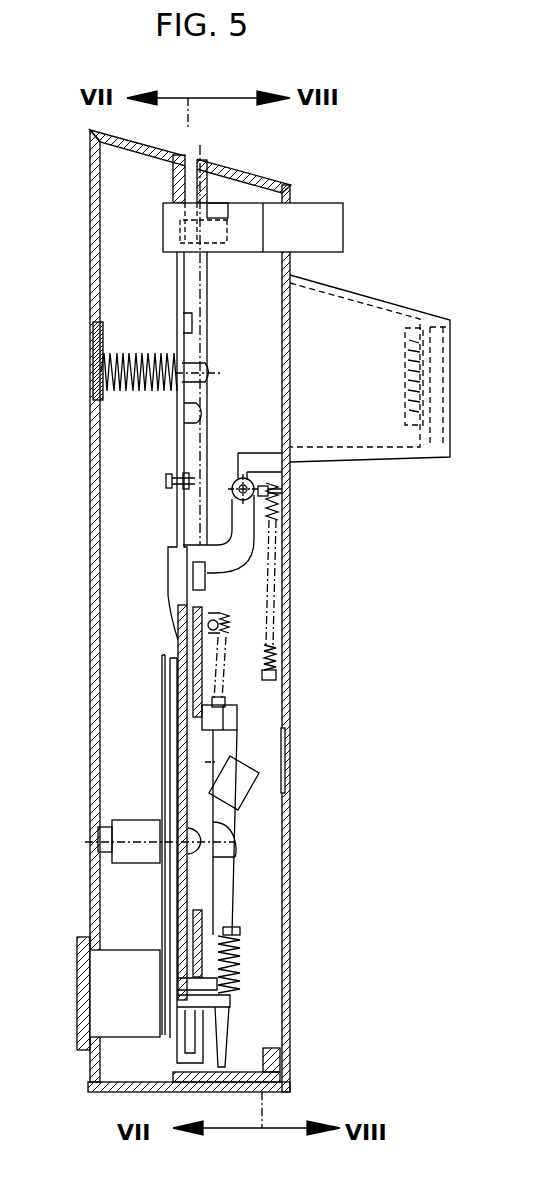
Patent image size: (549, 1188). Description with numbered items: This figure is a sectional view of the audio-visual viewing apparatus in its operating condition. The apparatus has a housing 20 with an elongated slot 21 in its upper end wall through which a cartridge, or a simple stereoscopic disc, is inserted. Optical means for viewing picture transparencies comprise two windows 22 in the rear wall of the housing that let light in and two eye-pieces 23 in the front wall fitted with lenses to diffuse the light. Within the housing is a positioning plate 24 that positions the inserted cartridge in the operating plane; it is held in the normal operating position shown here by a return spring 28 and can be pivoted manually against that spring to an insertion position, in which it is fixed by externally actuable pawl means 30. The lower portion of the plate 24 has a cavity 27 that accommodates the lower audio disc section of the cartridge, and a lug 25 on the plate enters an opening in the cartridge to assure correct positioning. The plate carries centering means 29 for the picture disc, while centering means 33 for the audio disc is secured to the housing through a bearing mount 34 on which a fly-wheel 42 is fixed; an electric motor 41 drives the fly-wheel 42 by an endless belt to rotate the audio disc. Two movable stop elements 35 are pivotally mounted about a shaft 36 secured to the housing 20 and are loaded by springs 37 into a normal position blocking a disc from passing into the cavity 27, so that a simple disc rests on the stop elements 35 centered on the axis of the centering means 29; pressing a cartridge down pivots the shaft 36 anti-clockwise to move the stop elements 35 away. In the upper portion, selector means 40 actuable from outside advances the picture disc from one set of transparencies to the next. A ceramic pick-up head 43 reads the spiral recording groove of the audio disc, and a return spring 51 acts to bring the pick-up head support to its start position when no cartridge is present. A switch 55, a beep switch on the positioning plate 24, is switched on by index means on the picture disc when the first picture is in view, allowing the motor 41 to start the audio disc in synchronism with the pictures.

The housing 20 is at (91, 238).
The elongated slot 21 is at (188, 162).
The windows 22 is at (95, 365).
The eye-pieces 23 is at (368, 312).
The positioning plate 24 is at (176, 434).
The lug 25 is at (218, 200).
The cavity 27 is at (193, 582).
The return spring 28 is at (140, 368).
The centering means for picture disc 29 is at (212, 372).
The pawl means 30 is at (325, 213).
The centering means for audio disc 33 is at (197, 860).
The bearing mount 34 is at (128, 828).
The stop elements 35 is at (235, 558).
The shaft 36 is at (240, 482).
The springs 37 is at (275, 632).
The selector means 40 is at (212, 299).
The electric motor 41 is at (100, 1003).
The fly-wheel 42 is at (163, 684).
The pick-up head 43 is at (250, 770).
The return spring 51 is at (238, 968).
The switch 55 is at (167, 481).